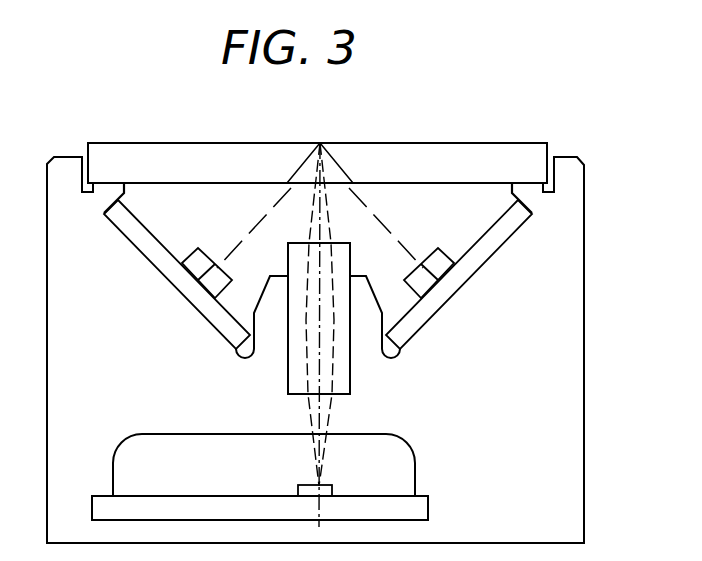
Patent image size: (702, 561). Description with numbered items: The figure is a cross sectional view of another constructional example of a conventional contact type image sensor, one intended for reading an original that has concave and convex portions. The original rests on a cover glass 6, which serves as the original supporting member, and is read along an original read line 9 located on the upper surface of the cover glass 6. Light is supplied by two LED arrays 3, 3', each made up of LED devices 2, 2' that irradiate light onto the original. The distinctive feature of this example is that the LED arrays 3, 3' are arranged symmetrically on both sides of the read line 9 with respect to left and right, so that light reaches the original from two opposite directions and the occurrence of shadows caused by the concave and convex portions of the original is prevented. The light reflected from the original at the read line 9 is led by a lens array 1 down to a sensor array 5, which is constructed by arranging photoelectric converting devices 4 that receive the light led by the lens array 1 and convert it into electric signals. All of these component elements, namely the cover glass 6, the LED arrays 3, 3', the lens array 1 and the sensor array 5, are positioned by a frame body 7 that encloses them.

The lens array 1 is at (343, 262).
The LED device 2 is at (207, 251).
The LED device 2' is at (430, 251).
The LED array 3 is at (196, 231).
The LED array 3' is at (442, 270).
The photoelectric converting device 4 is at (297, 490).
The sensor array 5 is at (420, 508).
The cover glass 6 is at (226, 160).
The frame body 7 is at (567, 333).
The original read line 9 is at (320, 143).